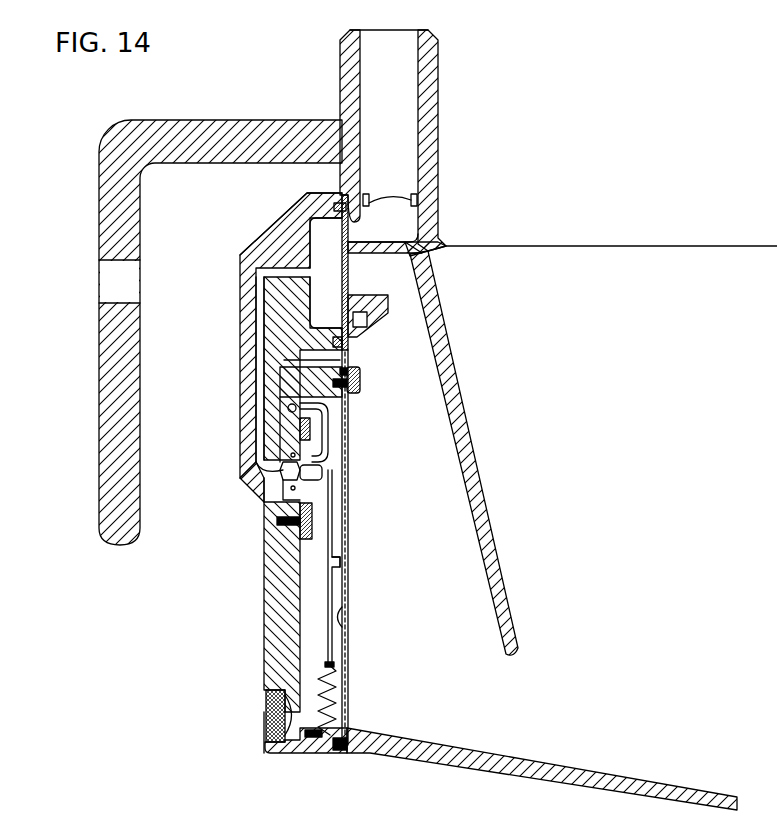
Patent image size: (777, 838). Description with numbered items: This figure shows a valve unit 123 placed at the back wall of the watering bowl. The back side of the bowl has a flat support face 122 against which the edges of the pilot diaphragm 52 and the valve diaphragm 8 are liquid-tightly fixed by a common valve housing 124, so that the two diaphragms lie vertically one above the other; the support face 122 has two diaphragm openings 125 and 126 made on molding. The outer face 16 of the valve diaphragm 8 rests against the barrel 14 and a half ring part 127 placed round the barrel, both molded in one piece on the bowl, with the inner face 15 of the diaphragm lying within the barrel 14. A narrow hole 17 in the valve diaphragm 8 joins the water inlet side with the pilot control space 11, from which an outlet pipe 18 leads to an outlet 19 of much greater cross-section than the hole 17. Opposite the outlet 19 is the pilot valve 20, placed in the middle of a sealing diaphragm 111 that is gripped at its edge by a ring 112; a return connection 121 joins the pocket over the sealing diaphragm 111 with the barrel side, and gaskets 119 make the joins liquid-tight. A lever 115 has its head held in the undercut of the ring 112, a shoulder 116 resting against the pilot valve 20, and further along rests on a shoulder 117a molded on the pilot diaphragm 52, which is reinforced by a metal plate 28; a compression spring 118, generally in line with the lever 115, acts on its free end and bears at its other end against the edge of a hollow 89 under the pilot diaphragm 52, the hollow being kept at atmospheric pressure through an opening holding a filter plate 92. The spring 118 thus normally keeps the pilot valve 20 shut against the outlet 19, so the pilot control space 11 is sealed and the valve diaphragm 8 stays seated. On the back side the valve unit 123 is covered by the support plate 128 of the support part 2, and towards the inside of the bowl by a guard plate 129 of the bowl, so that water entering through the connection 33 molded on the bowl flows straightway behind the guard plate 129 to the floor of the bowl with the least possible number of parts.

The support part 2 is at (185, 318).
The support plate 128 is at (110, 516).
The connection 33 is at (402, 112).
The diaphragm opening 126 is at (362, 216).
The outer face 16 is at (350, 238).
The barrel 14 is at (384, 248).
The guard plate 129 is at (488, 541).
The valve housing 124 is at (270, 230).
The valve unit 123 is at (228, 260).
The outlet pipe 18 is at (262, 350).
The pilot control space 11 is at (334, 281).
The valve diaphragm 8 is at (340, 224).
The inner face 15 is at (349, 283).
The narrow hole 17 is at (341, 322).
The half ring part 127 is at (372, 324).
The return connection 121 is at (346, 360).
The gasket 119 is at (362, 381).
The sealing diaphragm 111 is at (326, 452).
The pilot diaphragm 52 is at (345, 421).
The shoulder 116 is at (314, 474).
The outlet 19 is at (283, 472).
The pilot valve 20 is at (290, 480).
The ring 112 is at (322, 512).
The lever 115 is at (330, 595).
The stop 117a is at (340, 560).
The metal plate 28 is at (350, 613).
The hollow 89 is at (310, 627).
The filter plate 92 is at (266, 720).
The compression spring 118 is at (346, 714).
The diaphragm opening 125 is at (352, 734).
The support face 122 is at (340, 752).